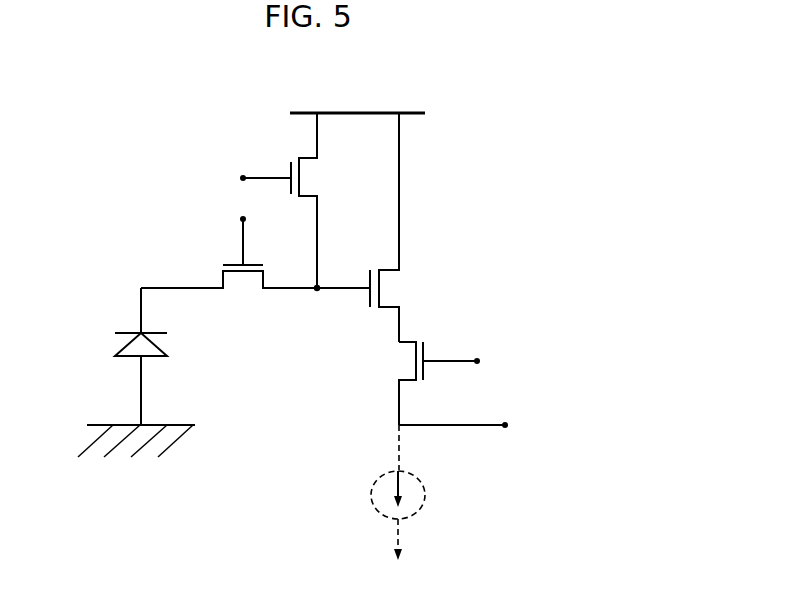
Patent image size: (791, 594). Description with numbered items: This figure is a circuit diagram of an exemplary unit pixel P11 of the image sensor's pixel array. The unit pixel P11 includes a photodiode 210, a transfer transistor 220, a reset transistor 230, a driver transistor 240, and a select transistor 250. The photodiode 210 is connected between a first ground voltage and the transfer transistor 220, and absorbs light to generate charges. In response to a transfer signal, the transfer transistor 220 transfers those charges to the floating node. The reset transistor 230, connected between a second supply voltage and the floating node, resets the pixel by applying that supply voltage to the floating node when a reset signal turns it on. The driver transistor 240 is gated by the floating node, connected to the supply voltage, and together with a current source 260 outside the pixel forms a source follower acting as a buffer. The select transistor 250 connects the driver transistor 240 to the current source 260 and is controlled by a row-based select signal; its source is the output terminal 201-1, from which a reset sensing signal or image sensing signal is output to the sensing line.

The photodiode 210 is at (130, 349).
The transfer transistor 220 is at (223, 280).
The reset transistor 230 is at (309, 164).
The driver transistor 240 is at (383, 253).
The select transistor 250 is at (408, 347).
The current source 260 is at (373, 481).
The output terminal 201-1 is at (465, 426).
The unit pixel P11 is at (478, 134).